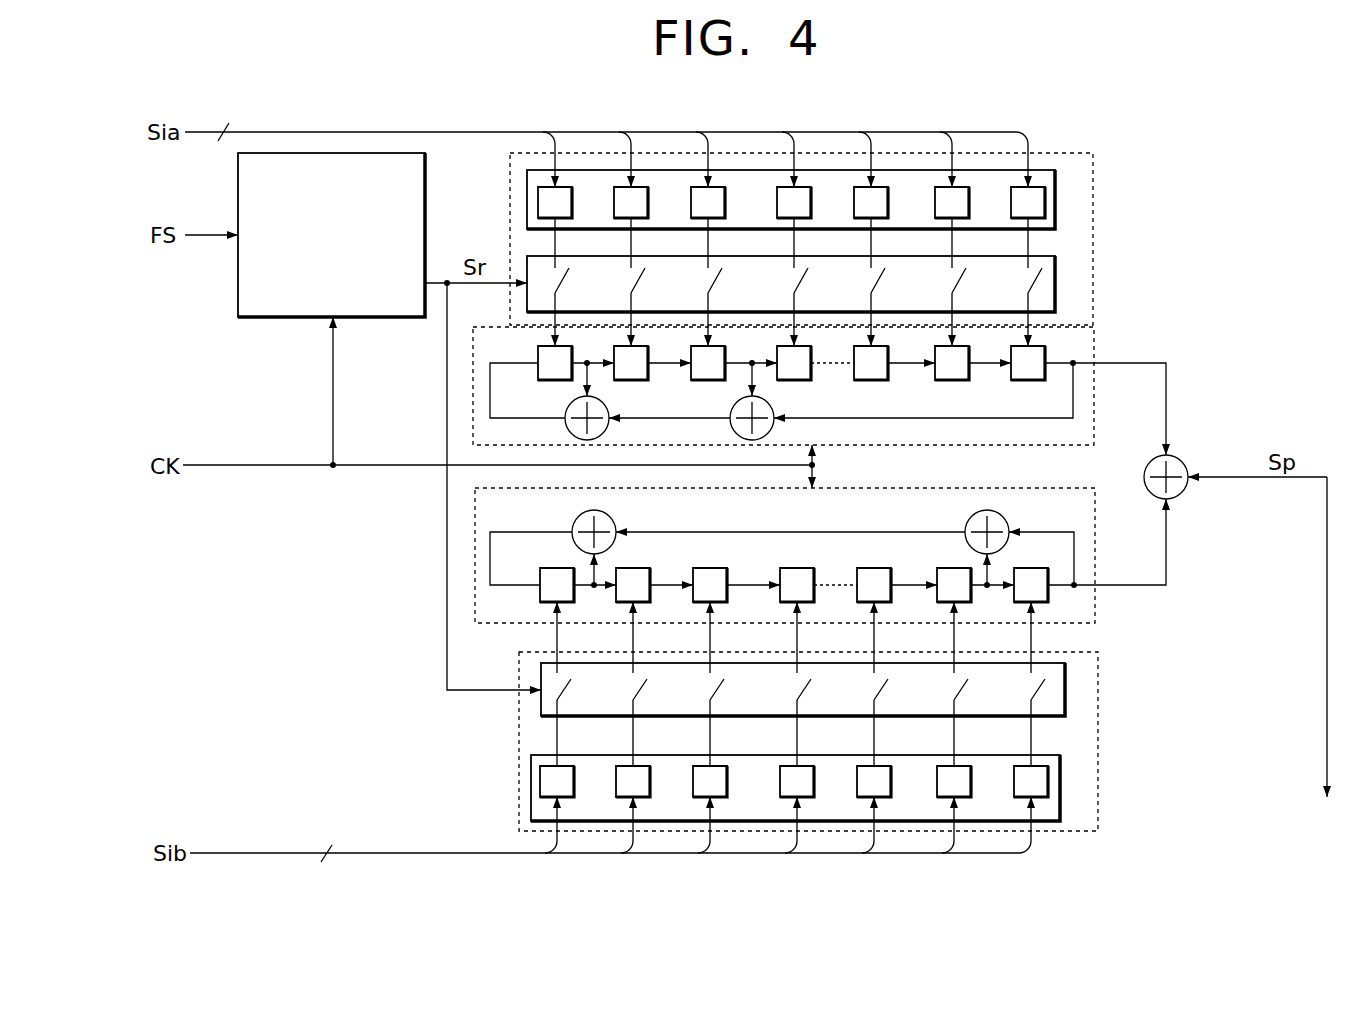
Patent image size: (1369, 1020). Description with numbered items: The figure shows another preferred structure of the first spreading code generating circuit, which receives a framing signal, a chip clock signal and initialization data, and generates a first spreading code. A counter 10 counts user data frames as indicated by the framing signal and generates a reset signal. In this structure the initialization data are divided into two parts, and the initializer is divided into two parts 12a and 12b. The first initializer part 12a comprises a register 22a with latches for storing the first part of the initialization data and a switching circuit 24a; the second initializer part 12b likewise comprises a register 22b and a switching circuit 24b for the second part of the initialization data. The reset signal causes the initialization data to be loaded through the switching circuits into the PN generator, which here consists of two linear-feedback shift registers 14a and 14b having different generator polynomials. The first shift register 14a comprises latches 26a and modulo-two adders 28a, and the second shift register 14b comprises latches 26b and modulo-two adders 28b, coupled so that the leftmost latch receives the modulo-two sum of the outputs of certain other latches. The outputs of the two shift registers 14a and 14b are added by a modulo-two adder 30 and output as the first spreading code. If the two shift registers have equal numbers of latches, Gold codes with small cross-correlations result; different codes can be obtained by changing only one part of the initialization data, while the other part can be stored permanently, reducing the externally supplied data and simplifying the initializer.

The counter 10 is at (272, 317).
The first part of the initializer 12a is at (1062, 152).
The register 22a is at (1055, 200).
The switching circuit 24a is at (1055, 283).
The first linear-feedback shift register 14a is at (1094, 347).
The latch 26a is at (538, 358).
The modulo-two adder 28a is at (772, 408).
The modulo-two adder 30 is at (1182, 456).
The second linear-feedback shift register 14b is at (1098, 600).
The latch 26b is at (540, 578).
The modulo-two adder 28b is at (968, 522).
The second part of the initializer 12b is at (1098, 742).
The switching circuit 24b is at (1065, 692).
The register 22b is at (1060, 792).